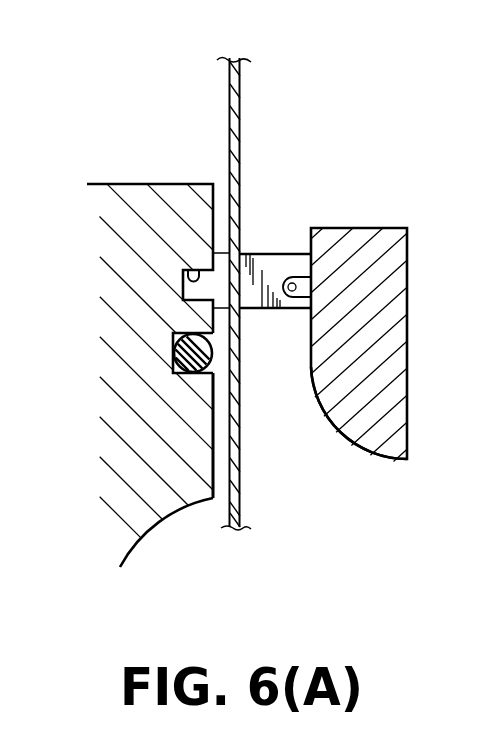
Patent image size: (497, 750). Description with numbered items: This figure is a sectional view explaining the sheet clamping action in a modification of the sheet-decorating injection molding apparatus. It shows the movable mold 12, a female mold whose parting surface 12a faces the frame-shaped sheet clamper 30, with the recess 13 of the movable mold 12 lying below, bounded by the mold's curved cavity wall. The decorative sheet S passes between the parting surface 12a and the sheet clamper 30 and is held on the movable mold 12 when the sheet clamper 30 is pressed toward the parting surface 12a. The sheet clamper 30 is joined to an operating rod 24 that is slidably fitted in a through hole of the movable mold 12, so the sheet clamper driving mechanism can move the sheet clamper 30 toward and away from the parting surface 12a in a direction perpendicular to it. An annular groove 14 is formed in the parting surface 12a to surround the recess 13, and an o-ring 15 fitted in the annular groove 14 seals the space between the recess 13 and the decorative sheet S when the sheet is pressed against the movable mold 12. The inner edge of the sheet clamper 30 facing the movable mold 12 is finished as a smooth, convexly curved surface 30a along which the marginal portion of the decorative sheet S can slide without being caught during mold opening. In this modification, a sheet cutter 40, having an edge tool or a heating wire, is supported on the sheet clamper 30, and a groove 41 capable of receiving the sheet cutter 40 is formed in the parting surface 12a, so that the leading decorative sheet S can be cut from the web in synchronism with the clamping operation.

The movable mold 12 is at (117, 184).
The parting surface 12a is at (215, 462).
The recess 13 is at (145, 537).
The annular groove 14 is at (172, 338).
The o-ring 15 is at (175, 362).
The groove 41 is at (195, 267).
The decorative sheet S is at (228, 97).
The operating rod 24 is at (255, 254).
The sheet cutter 40 is at (292, 283).
The sheet clamper 30 is at (382, 238).
The convexly curved surface 30a is at (350, 440).